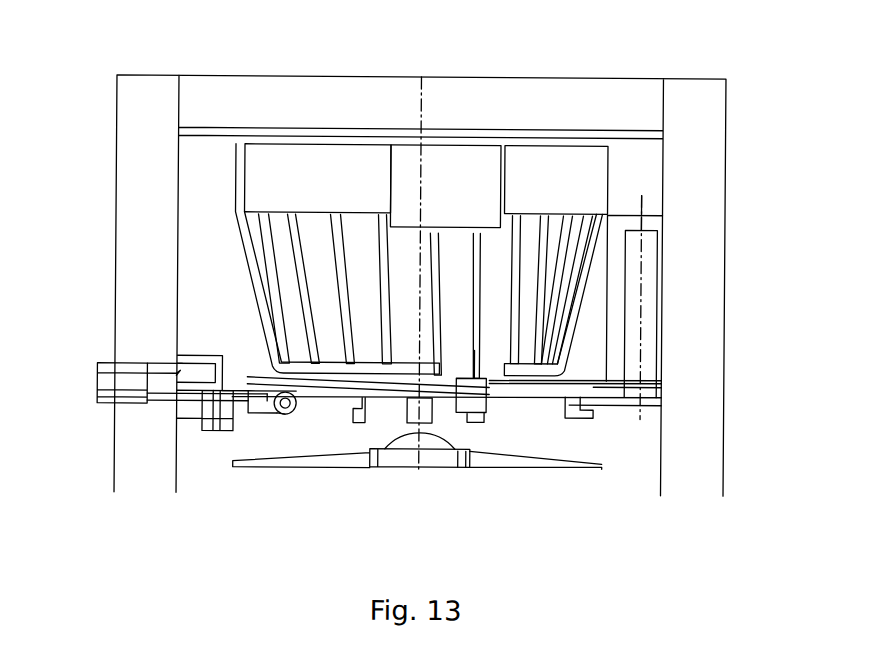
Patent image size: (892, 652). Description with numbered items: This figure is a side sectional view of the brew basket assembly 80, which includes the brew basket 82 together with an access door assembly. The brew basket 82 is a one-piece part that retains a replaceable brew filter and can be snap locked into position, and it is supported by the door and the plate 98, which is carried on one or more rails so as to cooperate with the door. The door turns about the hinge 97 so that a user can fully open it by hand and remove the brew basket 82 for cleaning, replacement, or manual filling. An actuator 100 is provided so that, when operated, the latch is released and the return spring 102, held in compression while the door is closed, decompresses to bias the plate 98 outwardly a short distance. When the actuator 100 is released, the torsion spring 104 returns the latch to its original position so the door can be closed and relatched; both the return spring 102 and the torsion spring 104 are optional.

The brew basket assembly 80 is at (764, 128).
The brew basket 82 is at (564, 159).
The hinge 97 is at (652, 282).
The plate 98 is at (580, 382).
The actuator 100 is at (108, 402).
The return spring 102 is at (286, 415).
The torsion spring 104 is at (217, 432).